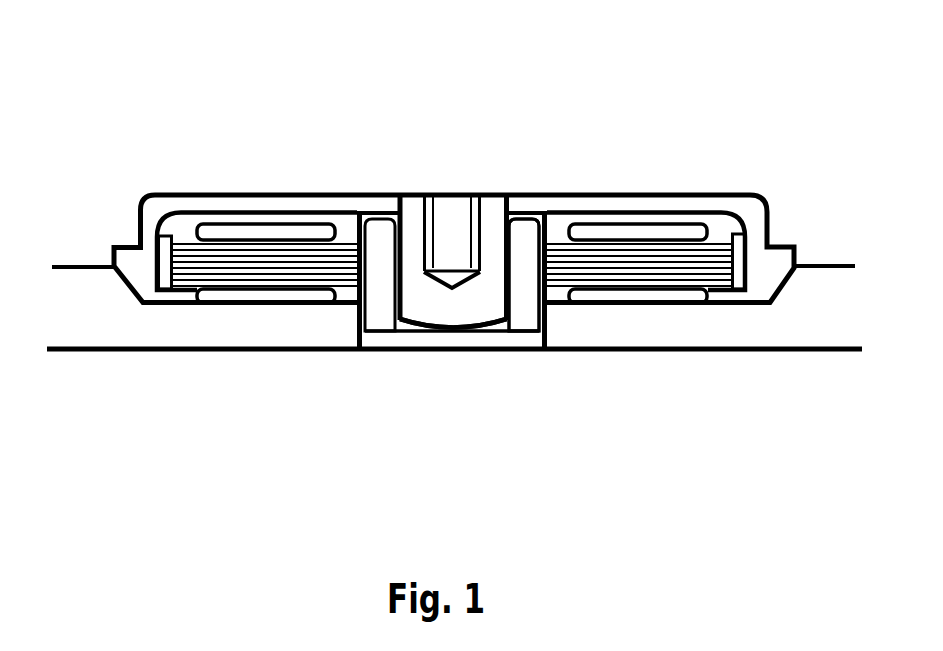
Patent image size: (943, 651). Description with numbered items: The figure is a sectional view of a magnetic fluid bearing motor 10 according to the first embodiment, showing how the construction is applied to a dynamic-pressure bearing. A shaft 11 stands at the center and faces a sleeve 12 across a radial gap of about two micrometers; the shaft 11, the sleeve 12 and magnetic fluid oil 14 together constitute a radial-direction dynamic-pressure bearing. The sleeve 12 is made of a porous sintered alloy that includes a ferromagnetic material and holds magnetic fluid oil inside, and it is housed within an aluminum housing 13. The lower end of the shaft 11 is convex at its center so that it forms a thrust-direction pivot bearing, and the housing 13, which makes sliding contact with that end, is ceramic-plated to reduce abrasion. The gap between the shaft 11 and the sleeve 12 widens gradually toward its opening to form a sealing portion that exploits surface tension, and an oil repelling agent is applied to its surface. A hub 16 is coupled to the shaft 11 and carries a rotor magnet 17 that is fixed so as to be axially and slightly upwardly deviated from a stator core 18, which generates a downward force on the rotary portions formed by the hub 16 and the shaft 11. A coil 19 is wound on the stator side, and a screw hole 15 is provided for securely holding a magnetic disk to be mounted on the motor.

The magnetic fluid bearing motor 10 is at (318, 143).
The shaft 11 is at (490, 228).
The sleeve 12 is at (523, 282).
The housing 13 is at (378, 340).
The magnetic fluid oil 14 is at (499, 320).
The screw hole 15 is at (448, 222).
The hub 16 is at (643, 193).
The rotor magnet 17 is at (741, 250).
The stator core 18 is at (203, 270).
The coil 19 is at (282, 293).